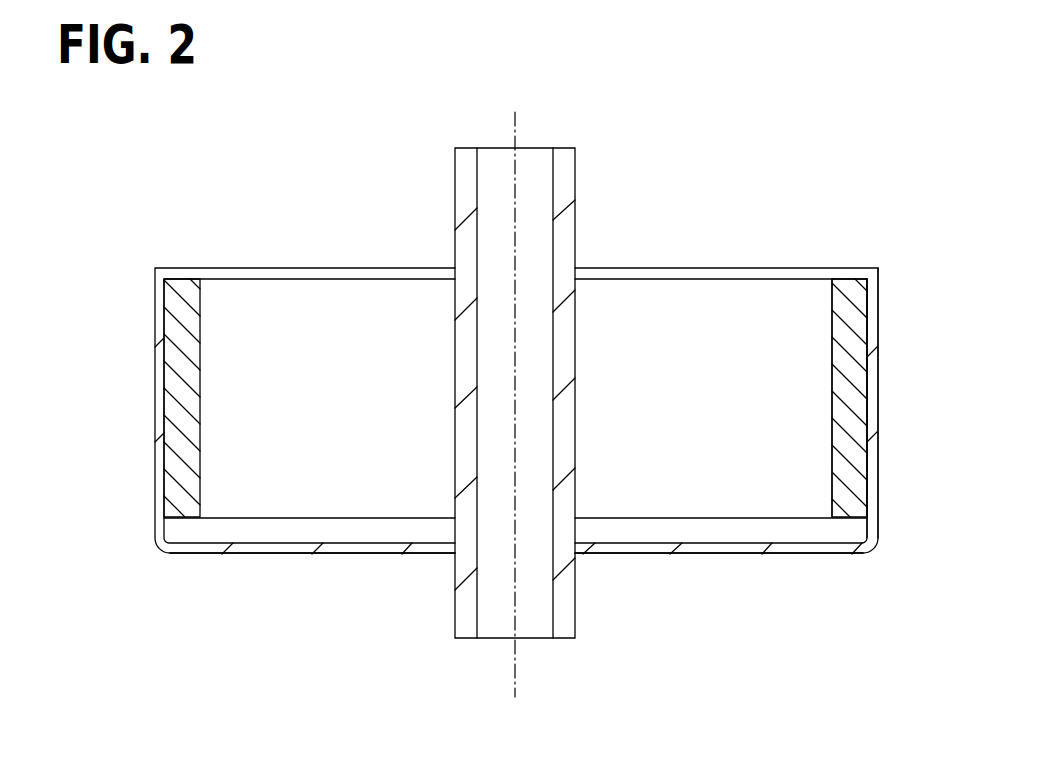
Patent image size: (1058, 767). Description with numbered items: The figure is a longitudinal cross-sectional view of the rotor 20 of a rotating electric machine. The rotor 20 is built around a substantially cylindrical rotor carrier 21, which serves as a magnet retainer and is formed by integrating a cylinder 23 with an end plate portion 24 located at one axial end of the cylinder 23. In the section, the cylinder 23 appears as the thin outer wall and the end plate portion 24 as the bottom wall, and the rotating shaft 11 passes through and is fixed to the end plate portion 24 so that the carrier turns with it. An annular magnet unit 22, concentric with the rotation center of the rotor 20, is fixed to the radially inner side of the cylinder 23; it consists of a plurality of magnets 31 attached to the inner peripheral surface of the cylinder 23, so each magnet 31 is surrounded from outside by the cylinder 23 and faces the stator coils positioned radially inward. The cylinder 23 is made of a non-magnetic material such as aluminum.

The rotor 20 is at (867, 198).
The rotating shaft 11 is at (572, 233).
The rotor carrier 21 is at (877, 323).
The magnet unit 22 is at (832, 293).
The cylinder 23 is at (877, 485).
The end plate portion 24 is at (802, 554).
The magnet 31 is at (832, 373).